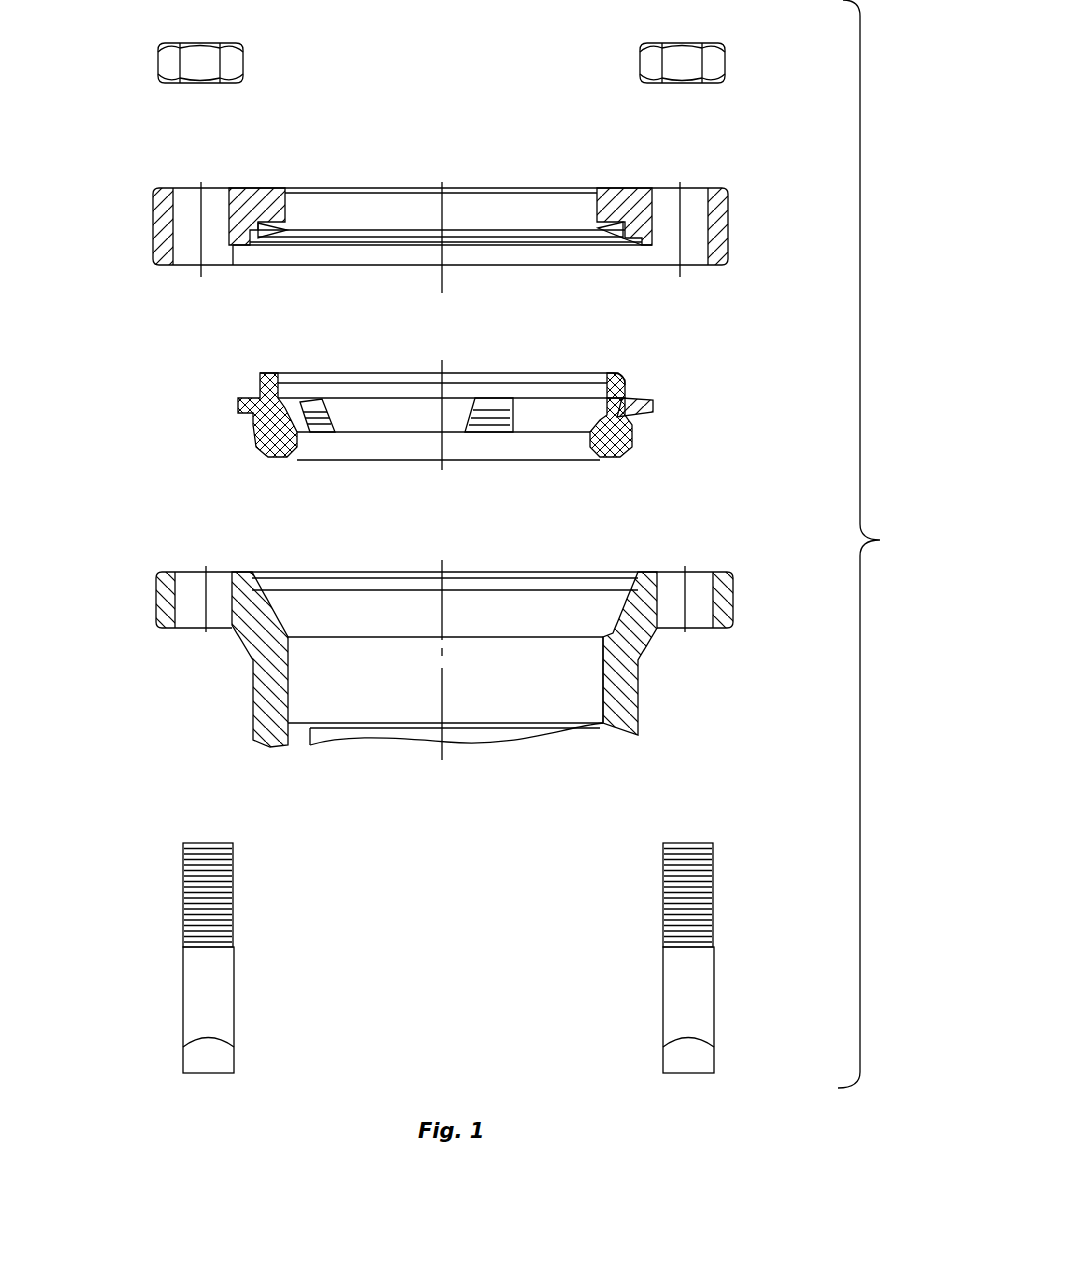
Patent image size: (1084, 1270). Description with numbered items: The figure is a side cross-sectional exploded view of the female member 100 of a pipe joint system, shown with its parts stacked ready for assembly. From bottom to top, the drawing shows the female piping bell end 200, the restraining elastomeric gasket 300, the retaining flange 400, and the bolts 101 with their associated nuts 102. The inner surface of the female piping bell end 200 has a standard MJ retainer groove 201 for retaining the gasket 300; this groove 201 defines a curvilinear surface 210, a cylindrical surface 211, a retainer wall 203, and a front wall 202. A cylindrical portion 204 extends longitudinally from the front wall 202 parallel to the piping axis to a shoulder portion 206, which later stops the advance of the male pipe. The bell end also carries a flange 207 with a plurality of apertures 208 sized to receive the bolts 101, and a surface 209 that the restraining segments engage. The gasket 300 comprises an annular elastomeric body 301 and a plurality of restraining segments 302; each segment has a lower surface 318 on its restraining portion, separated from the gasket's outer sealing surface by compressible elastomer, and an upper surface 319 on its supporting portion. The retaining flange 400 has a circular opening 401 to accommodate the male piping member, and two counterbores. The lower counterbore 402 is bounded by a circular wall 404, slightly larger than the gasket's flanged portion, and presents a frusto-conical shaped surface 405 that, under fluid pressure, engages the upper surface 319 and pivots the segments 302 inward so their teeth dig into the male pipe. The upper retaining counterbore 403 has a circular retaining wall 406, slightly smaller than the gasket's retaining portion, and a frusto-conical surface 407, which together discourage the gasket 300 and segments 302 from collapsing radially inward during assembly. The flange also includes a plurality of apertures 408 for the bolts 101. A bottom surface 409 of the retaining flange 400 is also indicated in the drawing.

The female member 100 is at (884, 544).
The bolts 101 is at (207, 1010).
The nuts 102 is at (230, 67).
The female piping bell end 200 is at (449, 671).
The retainer groove 201 is at (603, 613).
The front wall 202 is at (278, 640).
The retainer wall 203 is at (268, 624).
The cylindrical portion 204 is at (582, 688).
The shoulder portion 206 is at (298, 730).
The flange 207 is at (165, 584).
The apertures 208 is at (192, 613).
The surface 209 is at (727, 568).
The curvilinear surface 210 is at (635, 567).
The cylindrical surface 211 is at (257, 580).
The restraining elastomeric gasket 300 is at (453, 406).
The annular body 301 is at (268, 428).
The restraining segments 302 is at (650, 405).
The lower surface 318 is at (634, 426).
The upper surface 319 is at (644, 386).
The retaining flange 400 is at (444, 225).
The circular opening 401 is at (388, 195).
The lower counterbore 402 is at (287, 257).
The retaining counterbore 403 is at (613, 232).
The circular wall 404 is at (228, 248).
The frusto-conical shaped surface 405 is at (249, 242).
The circular retaining wall 406 is at (633, 227).
The frusto-conical surface 407 is at (613, 223).
The apertures 408 is at (195, 200).
The bottom surface 409 is at (406, 266).